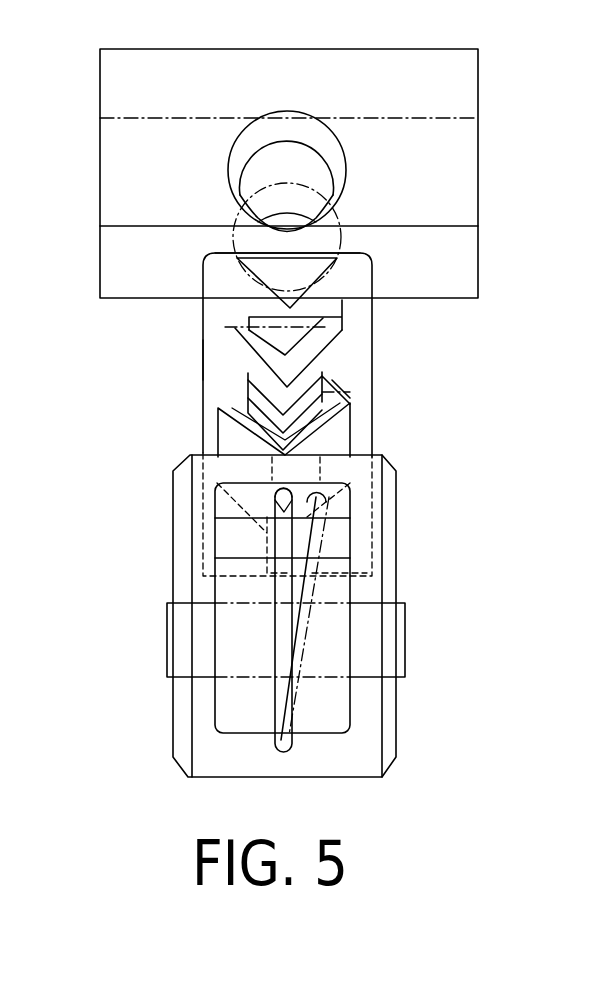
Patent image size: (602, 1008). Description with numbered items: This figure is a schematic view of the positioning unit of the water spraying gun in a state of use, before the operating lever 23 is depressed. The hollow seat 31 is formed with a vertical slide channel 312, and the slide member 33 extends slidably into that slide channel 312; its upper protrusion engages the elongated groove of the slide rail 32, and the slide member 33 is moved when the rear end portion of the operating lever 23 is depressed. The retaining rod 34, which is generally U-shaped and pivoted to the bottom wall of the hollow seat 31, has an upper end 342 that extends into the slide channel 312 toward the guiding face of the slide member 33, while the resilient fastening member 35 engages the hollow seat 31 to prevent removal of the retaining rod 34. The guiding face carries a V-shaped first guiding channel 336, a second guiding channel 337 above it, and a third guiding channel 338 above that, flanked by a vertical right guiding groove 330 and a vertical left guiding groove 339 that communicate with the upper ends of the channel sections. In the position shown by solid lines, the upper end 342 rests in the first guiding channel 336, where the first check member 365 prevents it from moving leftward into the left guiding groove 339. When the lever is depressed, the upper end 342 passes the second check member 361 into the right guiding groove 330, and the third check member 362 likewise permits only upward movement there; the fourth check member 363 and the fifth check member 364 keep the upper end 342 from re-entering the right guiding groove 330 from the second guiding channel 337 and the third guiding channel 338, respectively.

The operating lever 23 is at (478, 67).
The slide rail 32 is at (345, 172).
The slide member 33 is at (203, 314).
The right guiding groove 330 is at (335, 345).
The third guiding channel 338 is at (285, 316).
The fifth check member 364 is at (293, 320).
The left guiding groove 339 is at (220, 362).
The third check member 362 is at (340, 311).
The fourth check member 363 is at (249, 375).
The second check member 361 is at (343, 377).
The second guiding channel 337 is at (373, 410).
The first check member 365 is at (263, 437).
The first guiding channel 336 is at (330, 430).
The upper end of retaining rod 342 is at (312, 497).
The retaining rod 34 is at (352, 580).
The slide channel 312 is at (242, 580).
The resilient fastening member 35 is at (167, 658).
The hollow seat 31 is at (173, 698).